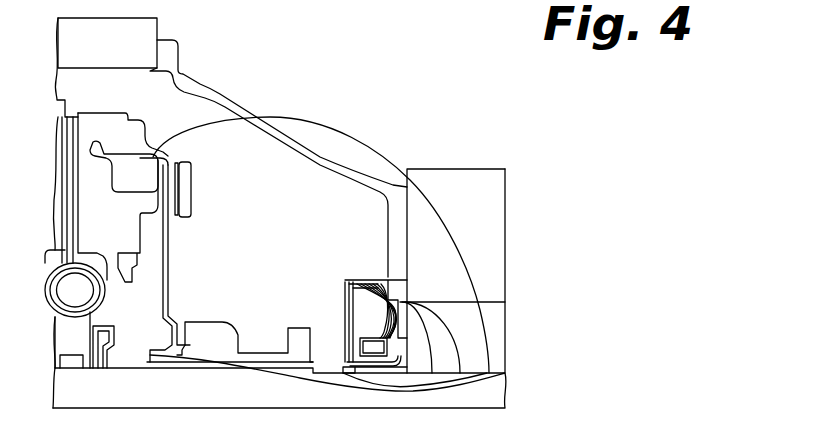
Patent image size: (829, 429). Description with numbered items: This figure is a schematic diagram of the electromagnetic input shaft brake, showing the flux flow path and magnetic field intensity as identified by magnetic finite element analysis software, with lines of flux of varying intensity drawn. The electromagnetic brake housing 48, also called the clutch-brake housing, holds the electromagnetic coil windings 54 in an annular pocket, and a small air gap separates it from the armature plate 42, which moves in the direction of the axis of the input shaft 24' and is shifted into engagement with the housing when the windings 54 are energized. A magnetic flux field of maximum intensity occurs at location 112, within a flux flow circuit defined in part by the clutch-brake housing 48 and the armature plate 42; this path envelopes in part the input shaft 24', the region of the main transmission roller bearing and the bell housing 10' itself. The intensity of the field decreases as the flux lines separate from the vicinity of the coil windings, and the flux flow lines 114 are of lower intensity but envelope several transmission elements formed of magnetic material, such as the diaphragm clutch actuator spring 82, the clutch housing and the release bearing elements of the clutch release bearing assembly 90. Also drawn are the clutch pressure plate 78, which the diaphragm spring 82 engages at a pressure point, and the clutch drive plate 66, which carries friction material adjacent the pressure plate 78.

The bell housing 10' is at (230, 213).
The input shaft 24' is at (279, 288).
The armature plate 42 is at (346, 318).
The electromagnetic brake housing 48 is at (375, 280).
The electromagnetic coil windings 54 is at (373, 348).
The clutch drive plate 66 is at (58, 244).
The clutch pressure plate 78 is at (122, 232).
The diaphragm clutch actuator spring 82 is at (168, 238).
The clutch release bearing assembly 90 is at (222, 318).
The location of maximum flux intensity 112 is at (368, 332).
The lower intensity flux flow lines 114 is at (448, 227).